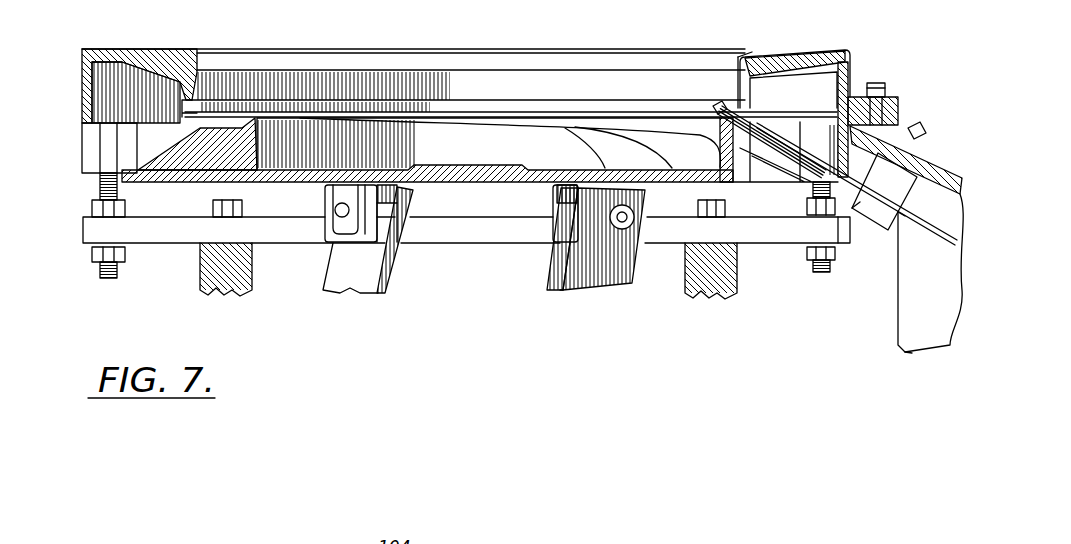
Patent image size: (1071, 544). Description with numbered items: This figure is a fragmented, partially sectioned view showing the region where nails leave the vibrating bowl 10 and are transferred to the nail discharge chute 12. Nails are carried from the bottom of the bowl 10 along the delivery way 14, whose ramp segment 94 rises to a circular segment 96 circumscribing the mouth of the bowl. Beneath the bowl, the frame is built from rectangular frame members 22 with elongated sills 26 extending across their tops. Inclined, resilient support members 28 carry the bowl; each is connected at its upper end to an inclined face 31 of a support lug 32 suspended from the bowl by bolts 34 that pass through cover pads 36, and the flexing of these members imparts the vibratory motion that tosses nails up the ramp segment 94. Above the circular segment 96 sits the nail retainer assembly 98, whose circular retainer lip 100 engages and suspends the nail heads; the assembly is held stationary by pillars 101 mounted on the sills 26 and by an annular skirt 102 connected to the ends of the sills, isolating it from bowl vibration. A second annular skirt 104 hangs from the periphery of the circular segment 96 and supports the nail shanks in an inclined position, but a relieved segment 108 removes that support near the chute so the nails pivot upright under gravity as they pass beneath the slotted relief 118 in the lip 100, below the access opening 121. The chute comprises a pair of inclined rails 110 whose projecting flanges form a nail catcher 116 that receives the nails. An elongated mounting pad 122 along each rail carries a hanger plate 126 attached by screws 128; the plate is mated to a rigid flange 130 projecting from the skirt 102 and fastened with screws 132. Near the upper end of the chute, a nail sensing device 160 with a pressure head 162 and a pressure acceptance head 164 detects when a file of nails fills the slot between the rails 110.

The bowl 10 is at (553, 147).
The nail discharge chute 12 is at (913, 362).
The delivery way 14 is at (410, 98).
The frame members 22 is at (232, 291).
The sills 26 is at (173, 228).
The support members 28 is at (368, 292).
The face 31 is at (607, 187).
The support lug 32 is at (320, 223).
The bolts 34 is at (632, 221).
The cover pads 36 is at (403, 236).
The ramp segment 94 is at (650, 137).
The circular segment 96 is at (240, 122).
The nail retainer assembly 98 is at (545, 49).
The retainer lip 100 is at (192, 98).
The pillars 101 is at (120, 272).
The annular skirt 102 is at (84, 80).
The annular skirt 104 is at (150, 152).
The relieved segment 108 is at (758, 140).
The rails 110 is at (912, 310).
The nail catcher 116 is at (785, 137).
The slotted relief 118 is at (768, 65).
The access opening 121 is at (798, 46).
The mounting pad 122 is at (933, 212).
The hanger plate 126 is at (962, 172).
The screws 128 is at (917, 133).
The rigid flange 130 is at (897, 105).
The screws 132 is at (879, 86).
The nail sensing device 160 is at (874, 240).
The pressure head 162 is at (905, 177).
The pressure acceptance head 164 is at (850, 222).